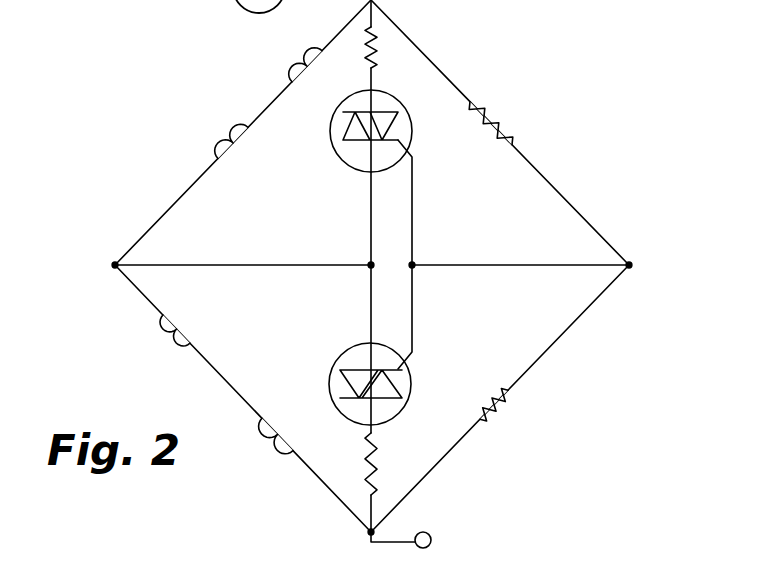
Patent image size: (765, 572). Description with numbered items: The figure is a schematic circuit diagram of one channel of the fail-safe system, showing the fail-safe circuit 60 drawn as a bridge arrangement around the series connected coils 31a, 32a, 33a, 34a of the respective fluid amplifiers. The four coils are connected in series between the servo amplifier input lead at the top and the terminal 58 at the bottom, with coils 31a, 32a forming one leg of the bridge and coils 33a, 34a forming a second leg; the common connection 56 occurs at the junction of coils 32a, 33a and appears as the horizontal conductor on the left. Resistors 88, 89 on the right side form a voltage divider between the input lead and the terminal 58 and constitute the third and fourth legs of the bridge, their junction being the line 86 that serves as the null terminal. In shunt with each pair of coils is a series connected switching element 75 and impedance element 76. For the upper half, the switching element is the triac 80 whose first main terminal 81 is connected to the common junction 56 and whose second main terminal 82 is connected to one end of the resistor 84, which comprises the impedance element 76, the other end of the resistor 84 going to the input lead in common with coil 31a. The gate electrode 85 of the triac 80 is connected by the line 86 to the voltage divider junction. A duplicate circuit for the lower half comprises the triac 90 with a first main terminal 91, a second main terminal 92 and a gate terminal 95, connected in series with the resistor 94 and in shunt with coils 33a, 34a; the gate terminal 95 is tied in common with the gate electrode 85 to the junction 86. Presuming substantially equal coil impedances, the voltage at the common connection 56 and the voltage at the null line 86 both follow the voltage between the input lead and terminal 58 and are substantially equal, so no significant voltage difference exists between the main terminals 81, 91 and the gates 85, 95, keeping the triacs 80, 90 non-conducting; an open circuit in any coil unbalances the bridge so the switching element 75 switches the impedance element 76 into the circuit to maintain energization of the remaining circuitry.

The coil 31a is at (290, 72).
The coil 32a is at (216, 147).
The coil 33a is at (173, 352).
The coil 34a is at (282, 462).
The common connection 56 is at (198, 265).
The terminal 58 is at (432, 537).
The fail-safe circuit 60 is at (541, 156).
The switching element 75 is at (418, 102).
The impedance element 76 is at (384, 30).
The triac 80 is at (412, 130).
The first main terminal 81 is at (362, 166).
The second main terminal 82 is at (368, 103).
The resistor 84 is at (374, 80).
The gate electrode 85 is at (406, 143).
The line 86 is at (470, 265).
The resistor element 88 is at (503, 118).
The resistor element 89 is at (497, 415).
The triac 90 is at (400, 388).
The first main terminal 91 is at (368, 352).
The second main terminal 92 is at (366, 414).
The resistor 94 is at (380, 462).
The gate terminal 95 is at (400, 365).